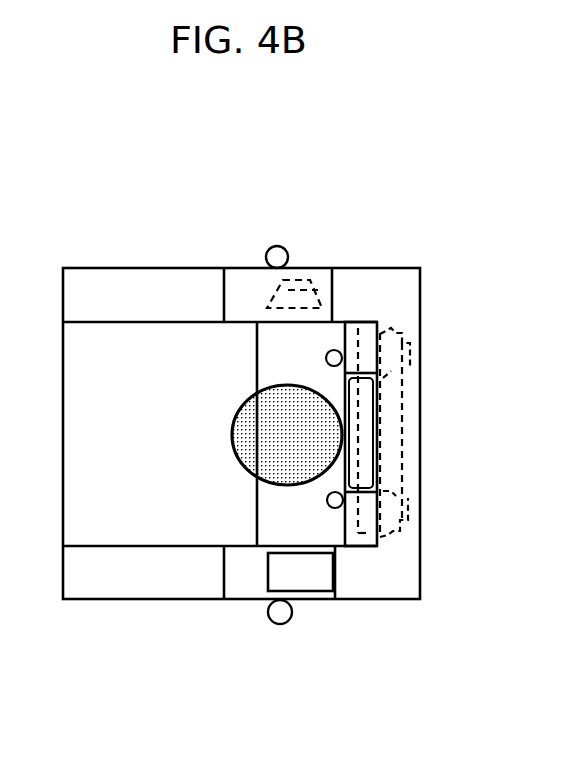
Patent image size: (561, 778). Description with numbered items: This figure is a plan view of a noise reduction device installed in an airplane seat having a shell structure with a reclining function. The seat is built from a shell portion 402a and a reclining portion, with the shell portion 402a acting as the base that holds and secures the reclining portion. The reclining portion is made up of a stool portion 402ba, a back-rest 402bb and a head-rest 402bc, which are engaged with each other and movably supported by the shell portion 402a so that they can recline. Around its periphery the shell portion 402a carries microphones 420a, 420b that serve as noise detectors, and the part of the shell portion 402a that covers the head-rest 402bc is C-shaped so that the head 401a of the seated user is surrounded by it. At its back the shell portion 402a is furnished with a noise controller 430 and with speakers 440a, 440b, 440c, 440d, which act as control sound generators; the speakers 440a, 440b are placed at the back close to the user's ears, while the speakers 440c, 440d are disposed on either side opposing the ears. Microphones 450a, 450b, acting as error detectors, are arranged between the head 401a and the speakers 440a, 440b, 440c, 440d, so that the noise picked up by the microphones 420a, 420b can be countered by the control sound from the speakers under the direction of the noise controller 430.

The head 401a is at (255, 432).
The shell portion 402a is at (386, 275).
The stool portion 402ba is at (128, 525).
The back-rest 402bb is at (315, 332).
The head-rest 402bc is at (370, 430).
The microphone 420a is at (283, 617).
The microphone 420b is at (274, 246).
The noise controller 430 is at (402, 398).
The speaker 440a is at (405, 512).
The speaker 440b is at (405, 352).
The speaker 440c is at (287, 567).
The speaker 440d is at (278, 300).
The microphone 450a is at (327, 503).
The microphone 450b is at (326, 357).